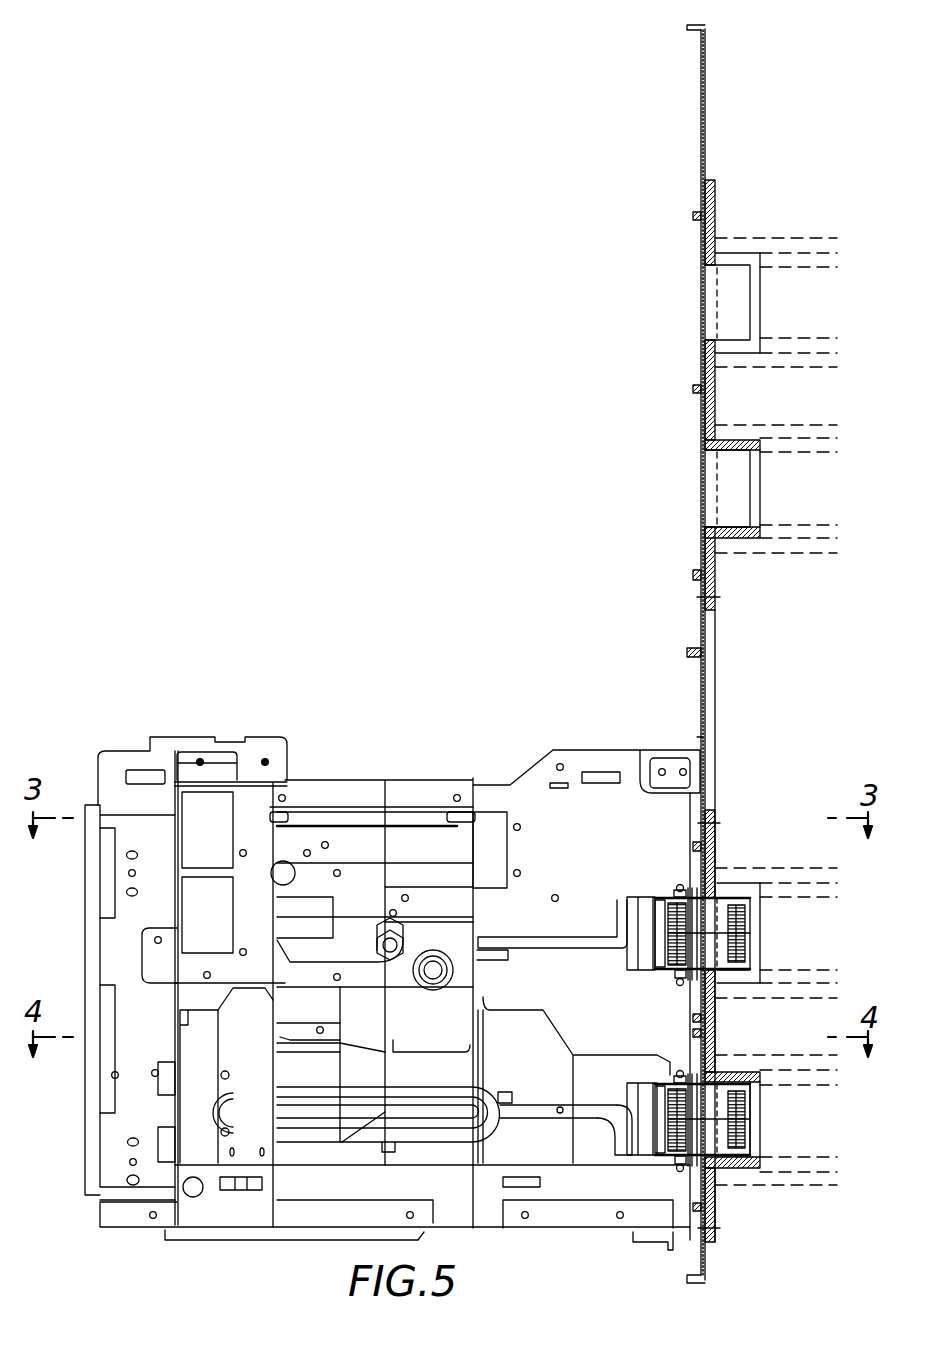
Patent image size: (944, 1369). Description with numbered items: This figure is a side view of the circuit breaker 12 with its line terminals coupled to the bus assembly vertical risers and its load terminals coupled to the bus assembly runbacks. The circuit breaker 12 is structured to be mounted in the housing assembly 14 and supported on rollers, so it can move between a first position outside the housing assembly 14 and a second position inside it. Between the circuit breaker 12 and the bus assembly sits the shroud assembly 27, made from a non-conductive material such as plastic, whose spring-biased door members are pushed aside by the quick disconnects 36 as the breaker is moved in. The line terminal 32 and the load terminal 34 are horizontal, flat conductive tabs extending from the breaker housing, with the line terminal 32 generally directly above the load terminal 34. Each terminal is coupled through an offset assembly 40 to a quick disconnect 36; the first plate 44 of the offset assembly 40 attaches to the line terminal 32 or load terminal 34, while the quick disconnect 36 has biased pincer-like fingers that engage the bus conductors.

The circuit breaker 12 is at (108, 762).
The housing assembly 14 is at (702, 100).
The shroud assembly 27 is at (712, 1040).
The line terminal 32 is at (497, 957).
The load terminal 34 is at (502, 1095).
The quick disconnect 36 is at (712, 917).
The offset assembly 40 is at (645, 908).
The first plate 44 is at (585, 942).